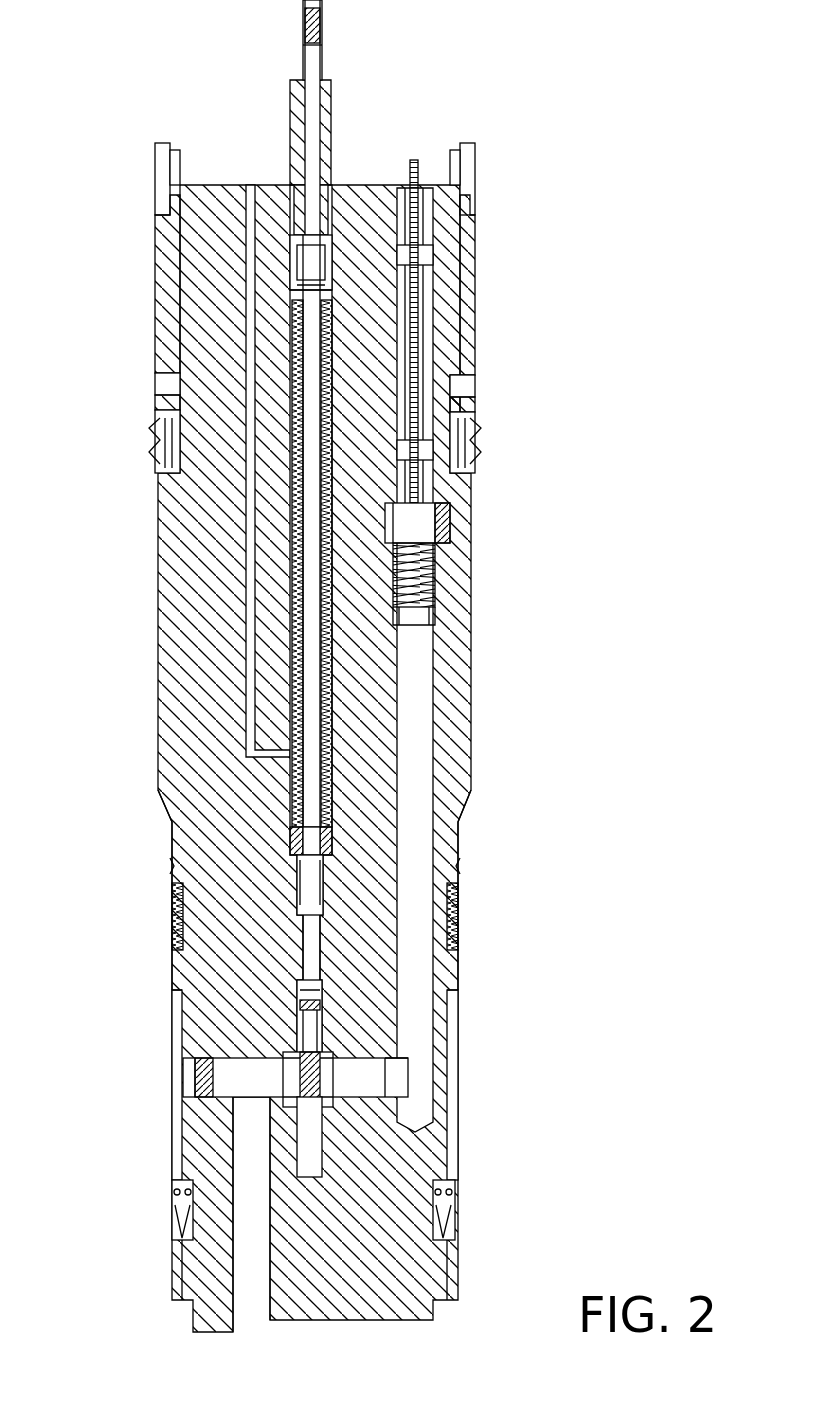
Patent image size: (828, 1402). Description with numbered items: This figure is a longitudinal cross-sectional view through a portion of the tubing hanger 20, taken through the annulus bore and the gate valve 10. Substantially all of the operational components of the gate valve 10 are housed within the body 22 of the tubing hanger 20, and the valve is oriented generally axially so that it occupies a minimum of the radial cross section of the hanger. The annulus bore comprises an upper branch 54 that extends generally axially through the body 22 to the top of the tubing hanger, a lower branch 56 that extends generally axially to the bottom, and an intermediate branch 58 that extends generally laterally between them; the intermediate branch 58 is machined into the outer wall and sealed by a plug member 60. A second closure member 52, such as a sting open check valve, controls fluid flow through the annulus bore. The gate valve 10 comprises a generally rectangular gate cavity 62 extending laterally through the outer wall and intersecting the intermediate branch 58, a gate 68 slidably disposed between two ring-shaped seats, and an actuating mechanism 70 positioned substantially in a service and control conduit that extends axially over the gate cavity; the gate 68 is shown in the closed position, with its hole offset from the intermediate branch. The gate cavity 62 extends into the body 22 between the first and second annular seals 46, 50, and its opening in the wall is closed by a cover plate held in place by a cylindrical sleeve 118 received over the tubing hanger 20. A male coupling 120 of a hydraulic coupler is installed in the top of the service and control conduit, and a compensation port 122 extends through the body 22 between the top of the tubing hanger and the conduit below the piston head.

The gate valve 10 is at (263, 1101).
The tubing hanger 20 is at (157, 661).
The body 22 is at (190, 836).
The first annular seal 46 is at (176, 1212).
The second annular seal 50 is at (176, 916).
The second closure member 52 is at (484, 505).
The upper branch 54 is at (427, 673).
The lower branch 56 is at (268, 1278).
The intermediate branch 58 is at (406, 1068).
The plug member 60 is at (194, 1075).
The gate cavity 62 is at (305, 1178).
The gate 68 is at (323, 1088).
The actuating mechanism 70 is at (287, 778).
The cylindrical sleeve 118 is at (458, 1010).
The male coupling 120 is at (331, 96).
The compensation port 122 is at (245, 501).